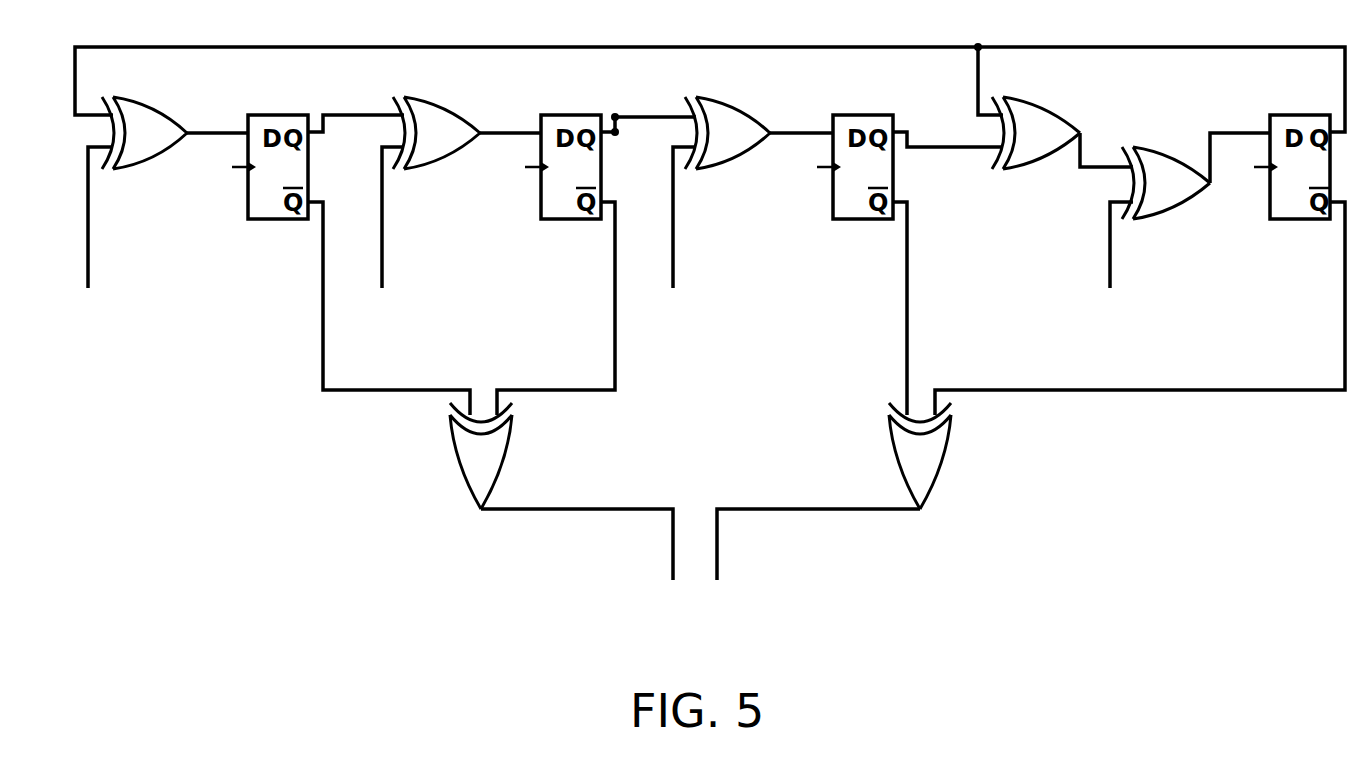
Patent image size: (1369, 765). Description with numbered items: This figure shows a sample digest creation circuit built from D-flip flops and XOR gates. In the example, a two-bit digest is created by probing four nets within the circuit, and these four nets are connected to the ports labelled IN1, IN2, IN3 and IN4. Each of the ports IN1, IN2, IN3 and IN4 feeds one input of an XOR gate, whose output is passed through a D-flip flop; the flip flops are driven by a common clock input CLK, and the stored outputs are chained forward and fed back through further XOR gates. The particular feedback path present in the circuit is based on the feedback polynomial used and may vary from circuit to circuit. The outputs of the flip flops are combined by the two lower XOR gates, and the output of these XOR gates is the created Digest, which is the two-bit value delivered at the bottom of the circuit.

The IN1 port IN1 is at (91, 234).
The IN2 port IN2 is at (383, 234).
The IN3 port IN3 is at (676, 234).
The IN4 port IN4 is at (1113, 262).
The clock input CLK is at (726, 178).
The digest Digest is at (700, 571).